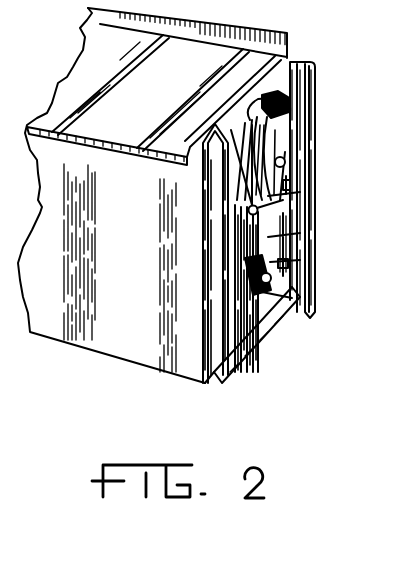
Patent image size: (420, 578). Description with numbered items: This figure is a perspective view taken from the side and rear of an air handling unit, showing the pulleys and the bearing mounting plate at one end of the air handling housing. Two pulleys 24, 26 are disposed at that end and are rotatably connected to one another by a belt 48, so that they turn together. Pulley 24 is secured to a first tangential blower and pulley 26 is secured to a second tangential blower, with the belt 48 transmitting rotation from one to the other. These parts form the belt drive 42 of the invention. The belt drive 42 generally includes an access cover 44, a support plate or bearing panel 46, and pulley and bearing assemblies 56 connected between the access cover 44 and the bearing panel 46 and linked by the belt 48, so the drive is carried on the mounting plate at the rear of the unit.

The pulley 24 is at (267, 150).
The pulley 26 is at (262, 292).
The belt drive 42 is at (267, 351).
The access cover 44 is at (290, 62).
The support plate or bearing panel 46 is at (275, 238).
The belt 48 is at (250, 208).
The pulley and bearing assemblies 56 is at (282, 182).